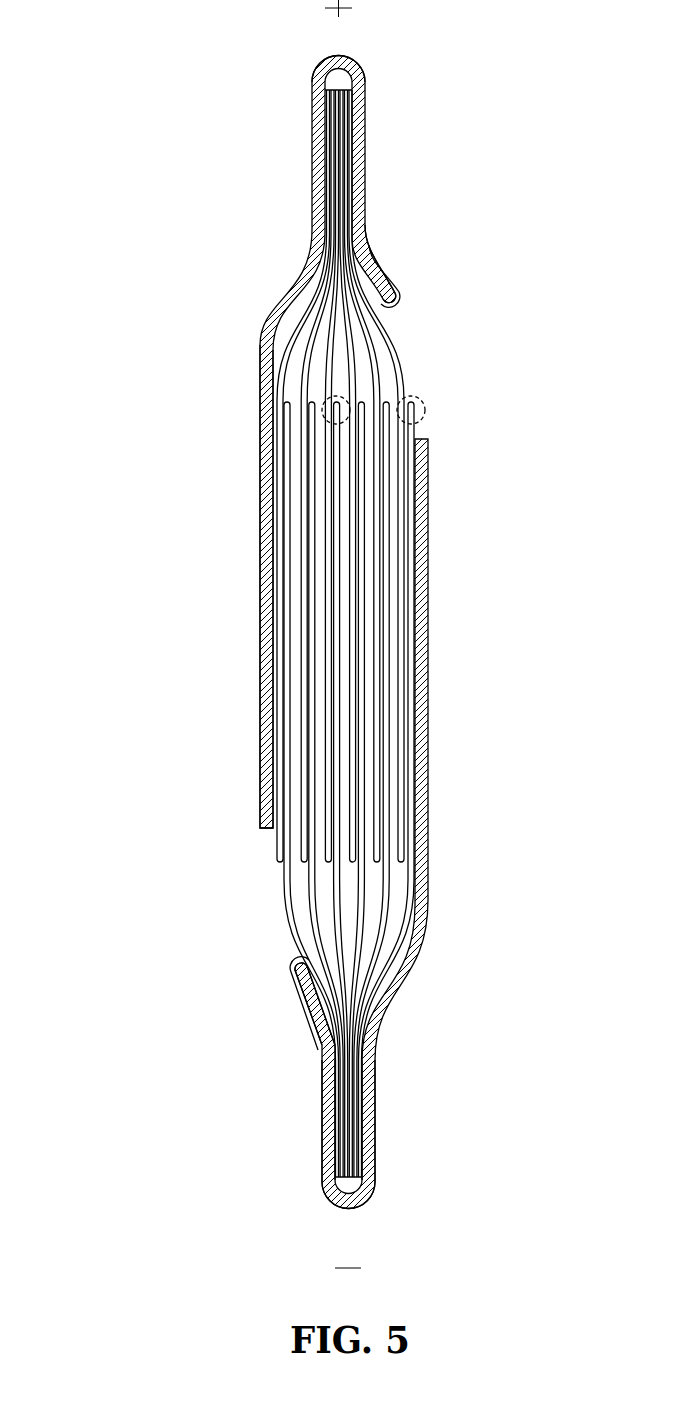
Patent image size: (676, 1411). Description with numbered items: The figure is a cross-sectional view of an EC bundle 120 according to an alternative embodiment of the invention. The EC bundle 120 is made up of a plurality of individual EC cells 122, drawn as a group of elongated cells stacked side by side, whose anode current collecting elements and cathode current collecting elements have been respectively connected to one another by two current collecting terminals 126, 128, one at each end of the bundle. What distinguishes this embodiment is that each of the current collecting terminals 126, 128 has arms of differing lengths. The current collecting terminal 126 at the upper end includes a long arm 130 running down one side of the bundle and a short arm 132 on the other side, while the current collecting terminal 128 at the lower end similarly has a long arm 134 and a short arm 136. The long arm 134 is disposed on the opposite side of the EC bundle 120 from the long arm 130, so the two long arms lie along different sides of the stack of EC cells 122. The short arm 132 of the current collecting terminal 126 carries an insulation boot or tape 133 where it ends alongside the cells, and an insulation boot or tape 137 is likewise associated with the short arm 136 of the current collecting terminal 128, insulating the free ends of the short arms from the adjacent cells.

The EC bundle 120 is at (133, 113).
The EC cells 122 is at (340, 397).
The current collecting terminal 126 is at (343, 48).
The current collecting terminal 128 is at (351, 1220).
The long arm 130 is at (258, 388).
The short arm 132 is at (368, 98).
The insulation boot or tape 133 is at (386, 268).
The long arm 134 is at (428, 897).
The short arm 136 is at (320, 1160).
The insulation boot or tape 137 is at (296, 990).